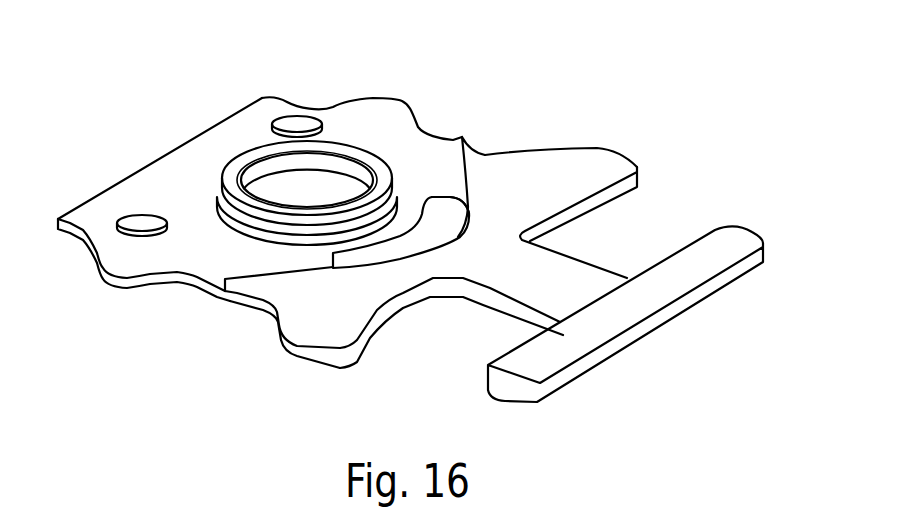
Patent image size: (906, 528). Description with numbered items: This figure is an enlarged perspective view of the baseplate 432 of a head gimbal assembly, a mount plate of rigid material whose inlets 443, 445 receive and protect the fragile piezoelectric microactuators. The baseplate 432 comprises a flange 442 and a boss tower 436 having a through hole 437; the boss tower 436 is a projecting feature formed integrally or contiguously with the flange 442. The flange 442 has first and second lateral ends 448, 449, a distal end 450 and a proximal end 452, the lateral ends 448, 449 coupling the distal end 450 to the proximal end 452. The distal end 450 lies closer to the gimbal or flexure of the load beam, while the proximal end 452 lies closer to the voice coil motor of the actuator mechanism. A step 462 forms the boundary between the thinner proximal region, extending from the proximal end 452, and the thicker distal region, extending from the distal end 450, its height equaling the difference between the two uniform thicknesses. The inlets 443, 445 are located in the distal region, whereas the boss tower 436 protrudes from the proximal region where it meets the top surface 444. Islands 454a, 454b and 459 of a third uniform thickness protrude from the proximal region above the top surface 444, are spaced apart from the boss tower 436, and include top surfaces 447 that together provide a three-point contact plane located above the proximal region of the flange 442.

The baseplate 432 is at (652, 117).
The boss tower 436 is at (417, 137).
The through hole 437 is at (338, 166).
The flange 442 is at (238, 306).
The inlet 443 is at (462, 344).
The top surface 444 is at (142, 255).
The inlet 445 is at (640, 226).
The top surfaces 447 is at (300, 122).
The first lateral end 448 is at (452, 138).
The second lateral end 449 is at (294, 355).
The distal end 450 is at (628, 343).
The proximal end 452 is at (190, 143).
The island 454a is at (283, 118).
The island 454b is at (128, 214).
The island 459 is at (450, 243).
The step 462 is at (487, 150).